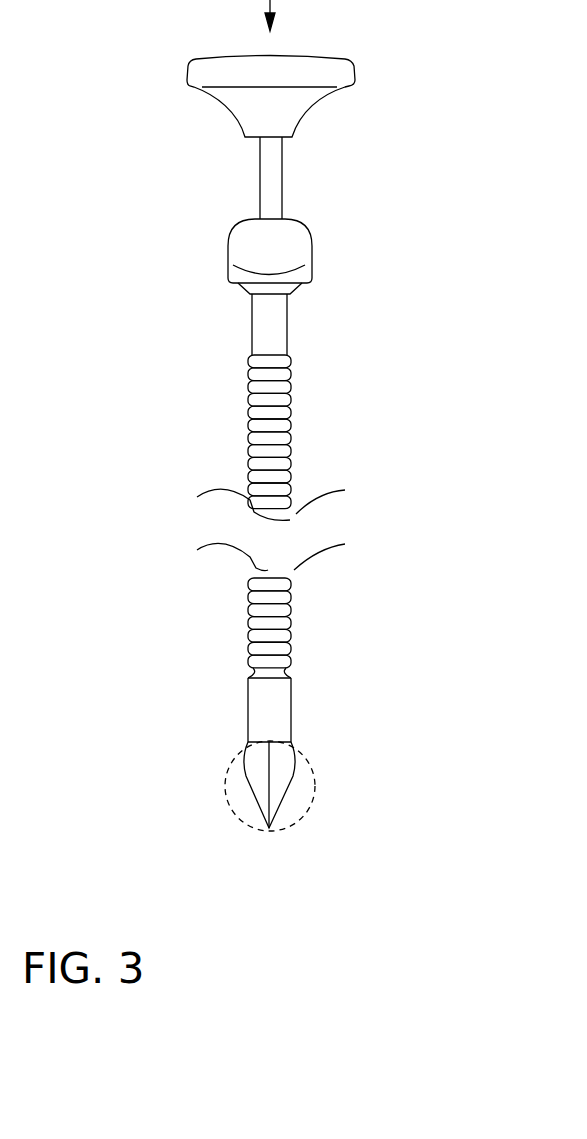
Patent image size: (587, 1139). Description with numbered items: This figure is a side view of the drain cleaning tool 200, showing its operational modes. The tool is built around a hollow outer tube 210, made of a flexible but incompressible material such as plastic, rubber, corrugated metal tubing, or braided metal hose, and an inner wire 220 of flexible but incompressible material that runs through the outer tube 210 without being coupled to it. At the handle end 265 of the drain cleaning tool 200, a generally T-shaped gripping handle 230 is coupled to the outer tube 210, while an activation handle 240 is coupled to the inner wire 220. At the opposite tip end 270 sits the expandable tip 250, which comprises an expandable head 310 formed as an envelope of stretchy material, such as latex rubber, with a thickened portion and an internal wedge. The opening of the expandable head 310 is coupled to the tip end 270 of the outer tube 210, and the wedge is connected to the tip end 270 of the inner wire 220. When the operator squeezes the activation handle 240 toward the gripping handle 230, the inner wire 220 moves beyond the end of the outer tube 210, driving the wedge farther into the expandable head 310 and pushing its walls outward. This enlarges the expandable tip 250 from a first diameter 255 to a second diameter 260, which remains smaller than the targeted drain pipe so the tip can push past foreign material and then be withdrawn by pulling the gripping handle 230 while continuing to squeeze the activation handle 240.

The drain cleaning tool 200 is at (372, 62).
The handle end 265 is at (110, 68).
The tip end 270 is at (88, 821).
The activation handle 240 is at (190, 73).
The inner wire 220 is at (331, 181).
The gripping handle 230 is at (228, 255).
The outer tube 210 is at (248, 634).
The expandable tip 250 is at (160, 744).
The expandable head 310 is at (291, 753).
The first diameter 255 is at (167, 854).
The second diameter 260 is at (313, 765).